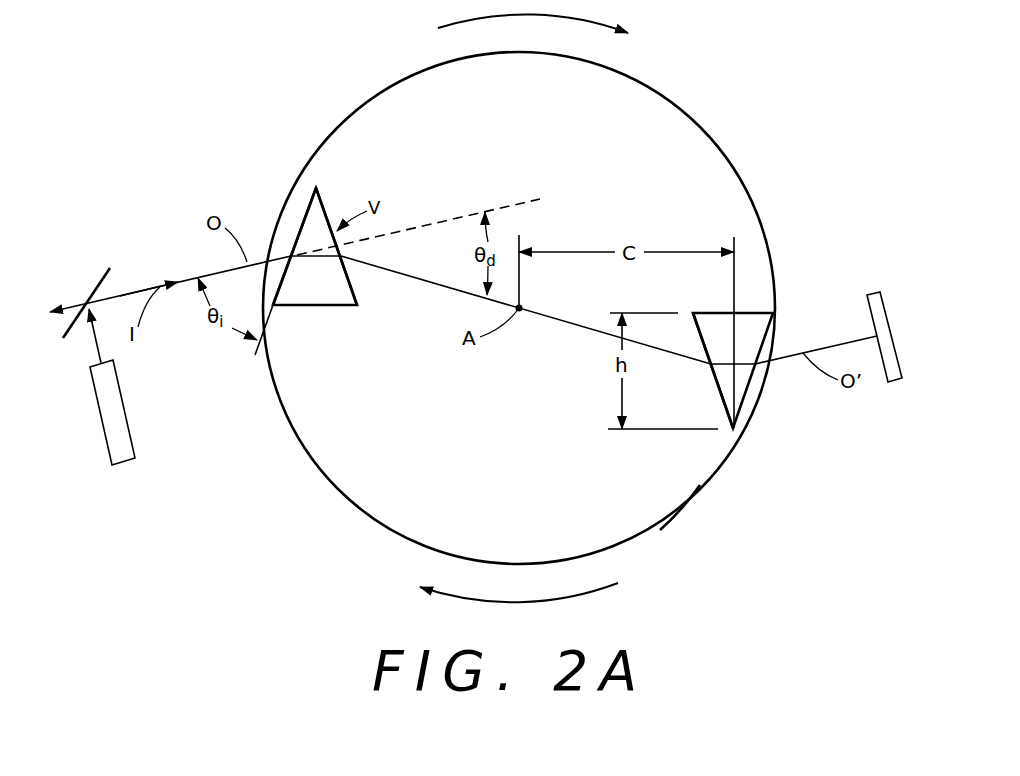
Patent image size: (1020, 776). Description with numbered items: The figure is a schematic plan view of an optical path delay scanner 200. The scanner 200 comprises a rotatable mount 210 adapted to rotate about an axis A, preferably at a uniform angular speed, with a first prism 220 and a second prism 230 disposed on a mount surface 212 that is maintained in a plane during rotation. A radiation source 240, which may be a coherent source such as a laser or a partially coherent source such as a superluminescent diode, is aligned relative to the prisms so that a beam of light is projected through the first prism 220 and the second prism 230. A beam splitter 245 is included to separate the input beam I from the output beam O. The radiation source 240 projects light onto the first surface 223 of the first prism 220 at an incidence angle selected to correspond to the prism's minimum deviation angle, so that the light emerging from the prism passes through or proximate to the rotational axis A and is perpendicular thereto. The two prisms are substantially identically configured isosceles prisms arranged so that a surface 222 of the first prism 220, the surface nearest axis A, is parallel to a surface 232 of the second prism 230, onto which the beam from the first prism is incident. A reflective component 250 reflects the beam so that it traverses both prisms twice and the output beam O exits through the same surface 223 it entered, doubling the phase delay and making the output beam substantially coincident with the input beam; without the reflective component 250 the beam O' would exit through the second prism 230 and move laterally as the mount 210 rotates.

The optical path delay scanner 200 is at (325, 80).
The rotatable mount 210 is at (703, 127).
The mount surface 212 is at (633, 475).
The first prism 220 is at (334, 308).
The surface of the first prism 222 is at (333, 230).
The first surface of the first prism 223 is at (297, 230).
The second prism 230 is at (747, 312).
The surface of the second prism 232 is at (698, 340).
The radiation source 240 is at (127, 465).
The beam splitter 245 is at (100, 282).
The reflective component 250 is at (880, 293).